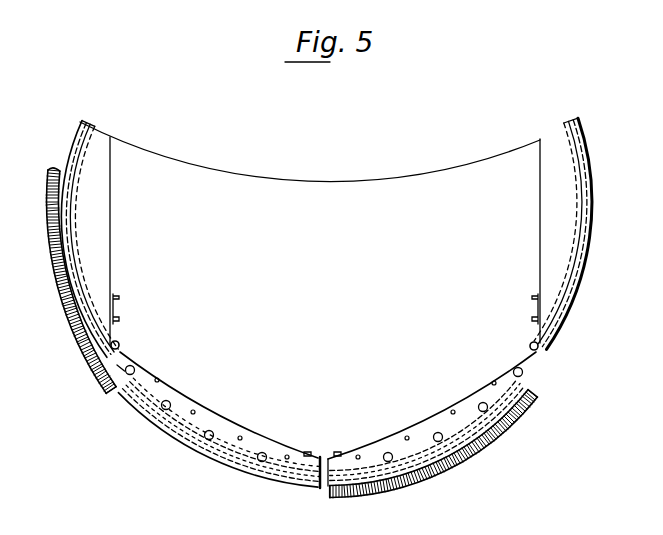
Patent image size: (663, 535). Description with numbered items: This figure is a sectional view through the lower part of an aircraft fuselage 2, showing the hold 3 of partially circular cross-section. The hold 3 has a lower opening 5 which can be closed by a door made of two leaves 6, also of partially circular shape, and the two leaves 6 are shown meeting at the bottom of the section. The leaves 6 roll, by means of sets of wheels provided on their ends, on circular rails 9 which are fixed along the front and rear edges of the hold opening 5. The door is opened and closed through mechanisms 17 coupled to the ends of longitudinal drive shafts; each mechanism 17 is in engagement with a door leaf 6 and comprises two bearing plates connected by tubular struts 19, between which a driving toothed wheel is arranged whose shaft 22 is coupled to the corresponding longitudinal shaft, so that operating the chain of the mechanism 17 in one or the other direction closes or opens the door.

The fuselage 2 is at (355, 171).
The hold 3 is at (254, 267).
The lower opening 5 is at (551, 358).
The door leaf 6 is at (57, 278).
The circular rail 9 is at (590, 240).
The mechanism 17 is at (197, 428).
The tubular strut 19 is at (262, 452).
The shaft 22 is at (120, 345).